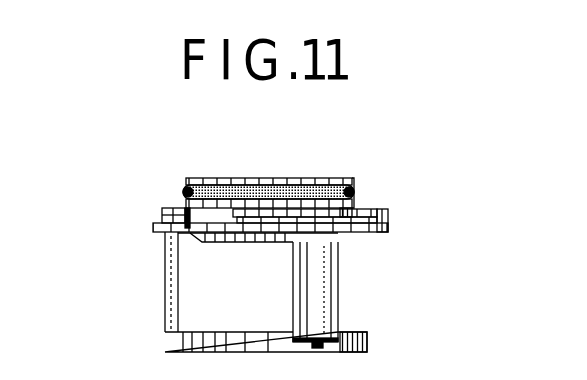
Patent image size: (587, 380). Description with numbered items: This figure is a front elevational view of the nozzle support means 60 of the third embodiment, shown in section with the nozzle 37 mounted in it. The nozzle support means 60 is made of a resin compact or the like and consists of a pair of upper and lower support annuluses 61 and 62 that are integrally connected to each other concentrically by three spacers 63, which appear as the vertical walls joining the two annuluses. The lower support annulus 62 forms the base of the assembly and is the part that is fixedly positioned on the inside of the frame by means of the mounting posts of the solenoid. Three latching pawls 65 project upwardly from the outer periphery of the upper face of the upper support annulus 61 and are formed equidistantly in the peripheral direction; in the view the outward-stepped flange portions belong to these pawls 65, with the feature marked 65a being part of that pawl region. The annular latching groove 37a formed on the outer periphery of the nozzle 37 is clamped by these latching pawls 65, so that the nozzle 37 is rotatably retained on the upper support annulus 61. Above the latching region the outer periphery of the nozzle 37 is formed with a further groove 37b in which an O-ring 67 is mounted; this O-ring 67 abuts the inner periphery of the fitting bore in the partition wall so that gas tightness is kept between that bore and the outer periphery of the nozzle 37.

The nozzle 37 is at (315, 180).
The annular latching groove 37a is at (266, 212).
The groove 37b is at (184, 192).
The nozzle support means 60 is at (156, 279).
The upper support annulus 61 is at (362, 235).
The lower support annulus 62 is at (366, 339).
The spacers 63 is at (163, 306).
The latching pawls 65 is at (192, 210).
The upper plate 65a is at (376, 209).
The O-ring 67 is at (354, 205).